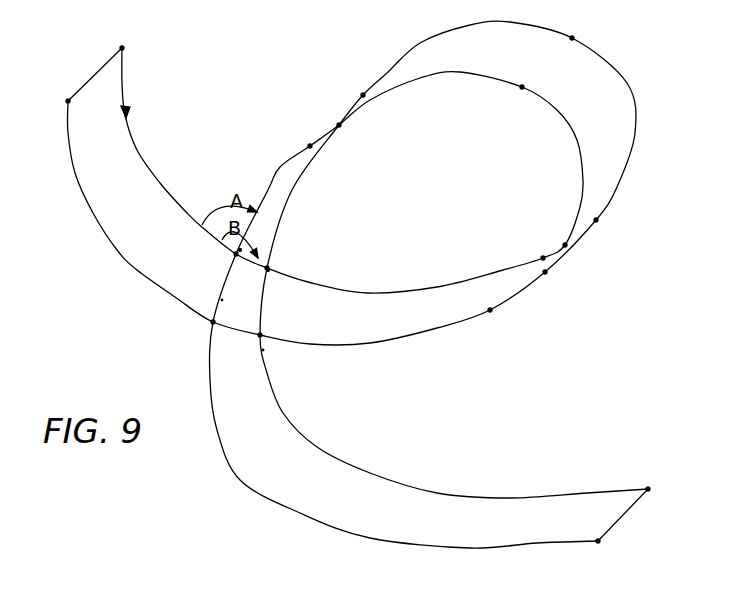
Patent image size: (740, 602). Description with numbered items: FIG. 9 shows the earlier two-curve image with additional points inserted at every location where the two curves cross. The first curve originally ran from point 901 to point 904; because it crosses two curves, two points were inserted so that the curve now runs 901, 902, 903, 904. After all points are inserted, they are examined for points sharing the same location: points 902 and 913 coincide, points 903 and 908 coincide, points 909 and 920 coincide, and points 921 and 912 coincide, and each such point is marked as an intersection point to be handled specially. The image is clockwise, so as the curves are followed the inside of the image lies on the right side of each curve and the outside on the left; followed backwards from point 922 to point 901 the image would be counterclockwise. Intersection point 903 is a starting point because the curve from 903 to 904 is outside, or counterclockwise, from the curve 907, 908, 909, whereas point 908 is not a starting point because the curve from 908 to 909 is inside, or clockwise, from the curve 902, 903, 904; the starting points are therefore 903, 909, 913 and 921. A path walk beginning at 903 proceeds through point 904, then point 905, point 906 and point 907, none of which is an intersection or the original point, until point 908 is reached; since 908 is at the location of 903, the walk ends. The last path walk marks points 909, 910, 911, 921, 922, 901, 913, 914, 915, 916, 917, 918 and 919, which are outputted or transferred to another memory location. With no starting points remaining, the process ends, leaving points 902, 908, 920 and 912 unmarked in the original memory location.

The first point 901 is at (140, 43).
The last point 922 is at (48, 93).
The inserted intersection point 902 is at (215, 264).
The inserted intersection point 903 is at (287, 260).
The end point of first curve 904 is at (522, 253).
The path point 905 is at (547, 232).
The path point 906 is at (505, 100).
The path point 907 is at (356, 136).
The intersection point 908 is at (268, 270).
The intersection point 909 is at (280, 326).
The path point 910 is at (668, 490).
The path point 911 is at (616, 553).
The intersection point 912 is at (192, 328).
The intersection point 913 is at (242, 249).
The path point 914 is at (292, 138).
The path point 915 is at (345, 84).
The path point 916 is at (590, 27).
The path point 917 is at (615, 232).
The path point 918 is at (563, 281).
The path point 919 is at (509, 321).
The intersection point 920 is at (282, 353).
The intersection point 921 is at (238, 310).